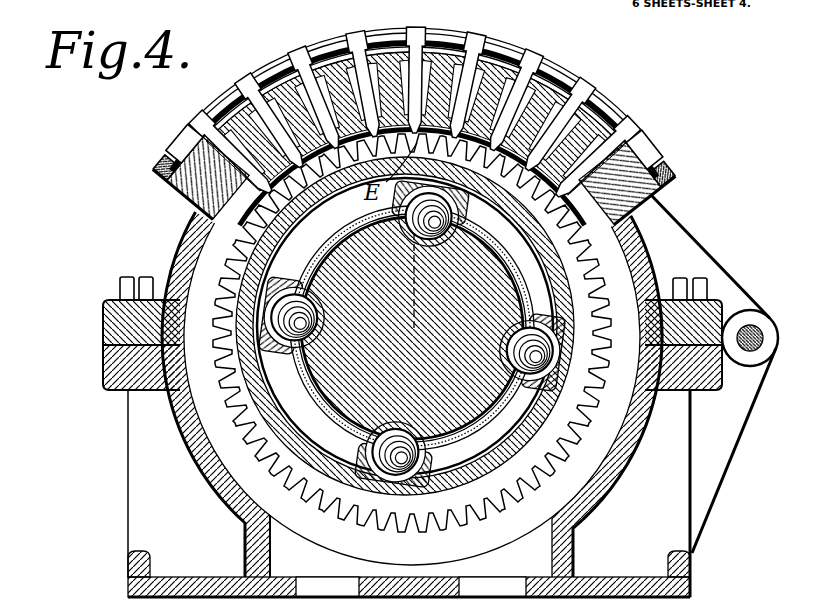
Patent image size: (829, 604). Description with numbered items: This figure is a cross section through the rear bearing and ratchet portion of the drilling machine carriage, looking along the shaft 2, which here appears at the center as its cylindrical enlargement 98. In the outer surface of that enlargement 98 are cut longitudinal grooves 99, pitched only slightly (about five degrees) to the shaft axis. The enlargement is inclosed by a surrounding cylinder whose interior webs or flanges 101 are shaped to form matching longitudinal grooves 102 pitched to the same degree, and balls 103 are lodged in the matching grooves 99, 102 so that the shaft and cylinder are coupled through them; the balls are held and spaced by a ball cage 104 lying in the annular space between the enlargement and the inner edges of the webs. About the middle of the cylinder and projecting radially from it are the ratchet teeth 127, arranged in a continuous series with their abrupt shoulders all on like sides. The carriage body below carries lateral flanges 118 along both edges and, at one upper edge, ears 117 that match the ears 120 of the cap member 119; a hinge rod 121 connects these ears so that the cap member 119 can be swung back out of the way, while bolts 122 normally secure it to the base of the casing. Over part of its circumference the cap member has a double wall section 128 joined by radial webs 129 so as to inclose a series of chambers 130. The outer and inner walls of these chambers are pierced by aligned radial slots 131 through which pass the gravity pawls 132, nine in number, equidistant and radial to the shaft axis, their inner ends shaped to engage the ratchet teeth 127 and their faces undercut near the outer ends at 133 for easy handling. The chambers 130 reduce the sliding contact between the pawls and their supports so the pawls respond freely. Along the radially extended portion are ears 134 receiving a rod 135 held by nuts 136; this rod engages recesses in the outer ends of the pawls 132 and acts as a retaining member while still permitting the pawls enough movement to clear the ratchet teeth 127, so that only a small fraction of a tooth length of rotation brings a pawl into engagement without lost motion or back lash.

The shaft 2 is at (352, 395).
The cylindrical enlargement 98 is at (512, 280).
The longitudinal grooves 99 is at (412, 334).
The interior webs or flanges 101 is at (547, 335).
The longitudinal grooves 102 is at (585, 420).
The balls 103 is at (498, 450).
The ball cage 104 is at (462, 505).
The ears 117 is at (720, 451).
The lateral flanges 118 is at (113, 373).
The cap member 119 is at (633, 233).
The ears 120 is at (725, 290).
The hinge rod or bolt 121 is at (747, 357).
The bolts 122 is at (122, 288).
The ratchet teeth 127 is at (233, 433).
The double wall section 128 is at (545, 84).
The radial webs 129 is at (222, 108).
The chambers 130 is at (195, 156).
The radial slots 131 is at (280, 87).
The gravity pawls 132 is at (419, 60).
The undercut 133 is at (478, 46).
The ears 134 is at (324, 56).
The rod 135 is at (602, 101).
The nuts 136 is at (167, 177).